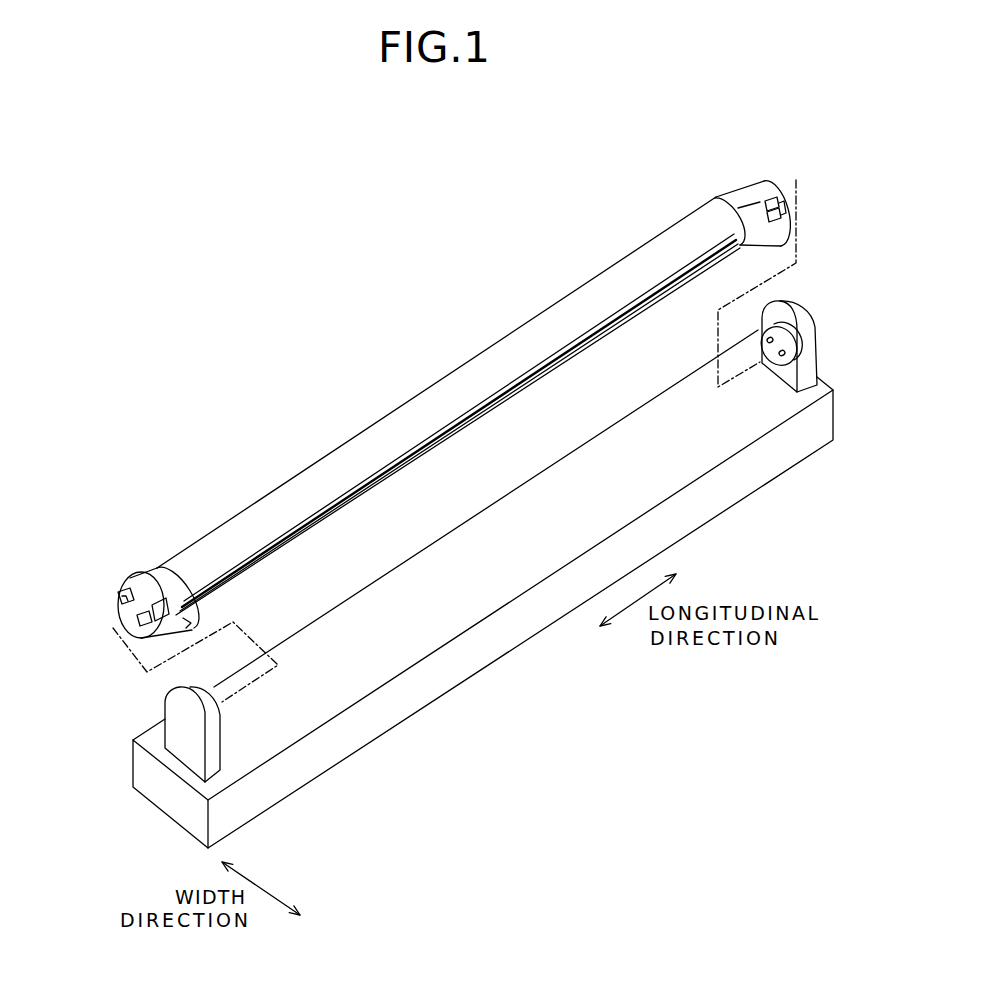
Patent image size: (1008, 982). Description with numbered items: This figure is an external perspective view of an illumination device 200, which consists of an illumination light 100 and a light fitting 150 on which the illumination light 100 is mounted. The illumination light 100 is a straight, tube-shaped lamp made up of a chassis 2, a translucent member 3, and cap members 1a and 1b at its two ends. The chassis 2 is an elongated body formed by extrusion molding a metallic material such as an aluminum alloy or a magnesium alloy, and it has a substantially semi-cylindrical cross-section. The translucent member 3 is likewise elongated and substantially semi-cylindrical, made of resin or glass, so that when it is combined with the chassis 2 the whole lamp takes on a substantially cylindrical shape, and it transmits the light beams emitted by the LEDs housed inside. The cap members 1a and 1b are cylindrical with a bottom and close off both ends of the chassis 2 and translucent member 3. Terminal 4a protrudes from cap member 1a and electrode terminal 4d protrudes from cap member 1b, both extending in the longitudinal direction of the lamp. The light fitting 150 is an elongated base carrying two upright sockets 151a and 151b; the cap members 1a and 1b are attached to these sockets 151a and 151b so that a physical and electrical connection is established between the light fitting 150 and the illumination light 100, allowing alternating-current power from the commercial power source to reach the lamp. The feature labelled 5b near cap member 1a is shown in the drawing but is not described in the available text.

The illumination light 100 is at (383, 384).
The cap member 1a is at (160, 571).
The cap member 1b is at (740, 192).
The chassis 2 is at (419, 456).
The translucent member 3 is at (312, 468).
The terminal 4a is at (123, 594).
The electrode terminal 4d is at (785, 218).
The projection 5b is at (195, 622).
The illumination device 200 is at (150, 870).
The light fitting 150 is at (548, 634).
The socket 151a is at (212, 738).
The socket 151b is at (793, 376).